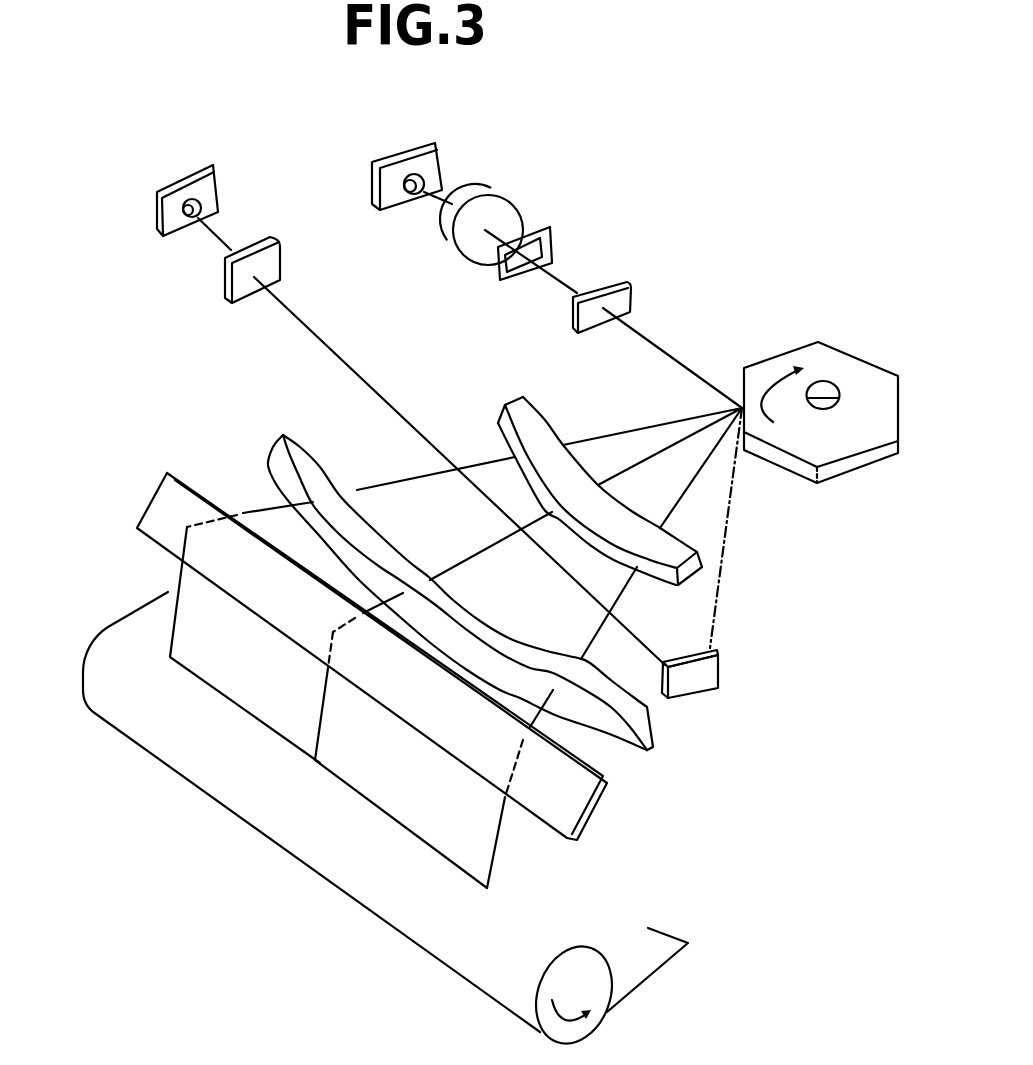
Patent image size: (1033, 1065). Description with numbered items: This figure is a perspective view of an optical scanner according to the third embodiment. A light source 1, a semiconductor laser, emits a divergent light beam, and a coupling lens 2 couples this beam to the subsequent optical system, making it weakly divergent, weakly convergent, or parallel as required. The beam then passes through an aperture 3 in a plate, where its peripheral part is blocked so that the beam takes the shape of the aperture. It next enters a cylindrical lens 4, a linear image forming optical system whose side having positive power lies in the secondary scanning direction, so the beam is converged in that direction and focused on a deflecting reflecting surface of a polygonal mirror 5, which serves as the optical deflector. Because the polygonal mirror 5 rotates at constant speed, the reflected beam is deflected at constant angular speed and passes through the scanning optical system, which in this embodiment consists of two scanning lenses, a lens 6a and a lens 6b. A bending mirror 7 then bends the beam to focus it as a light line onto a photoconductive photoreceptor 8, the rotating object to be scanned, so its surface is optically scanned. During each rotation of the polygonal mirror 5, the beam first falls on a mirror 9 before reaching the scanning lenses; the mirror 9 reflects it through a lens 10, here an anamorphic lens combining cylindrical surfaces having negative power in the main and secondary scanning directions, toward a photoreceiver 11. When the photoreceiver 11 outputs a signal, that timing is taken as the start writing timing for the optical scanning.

The light source 1 is at (437, 143).
The coupling lens 2 is at (505, 193).
The aperture 3 is at (549, 233).
The cylindrical lens 4 is at (627, 285).
The polygonal mirror 5 is at (860, 357).
The lens 6a is at (520, 399).
The lens 6b is at (283, 435).
The bending mirror 7 is at (153, 500).
The photoconductive photoreceptor 8 is at (570, 953).
The mirror 9 is at (718, 672).
The lens 10 is at (226, 283).
The photoreceiver 11 is at (157, 203).